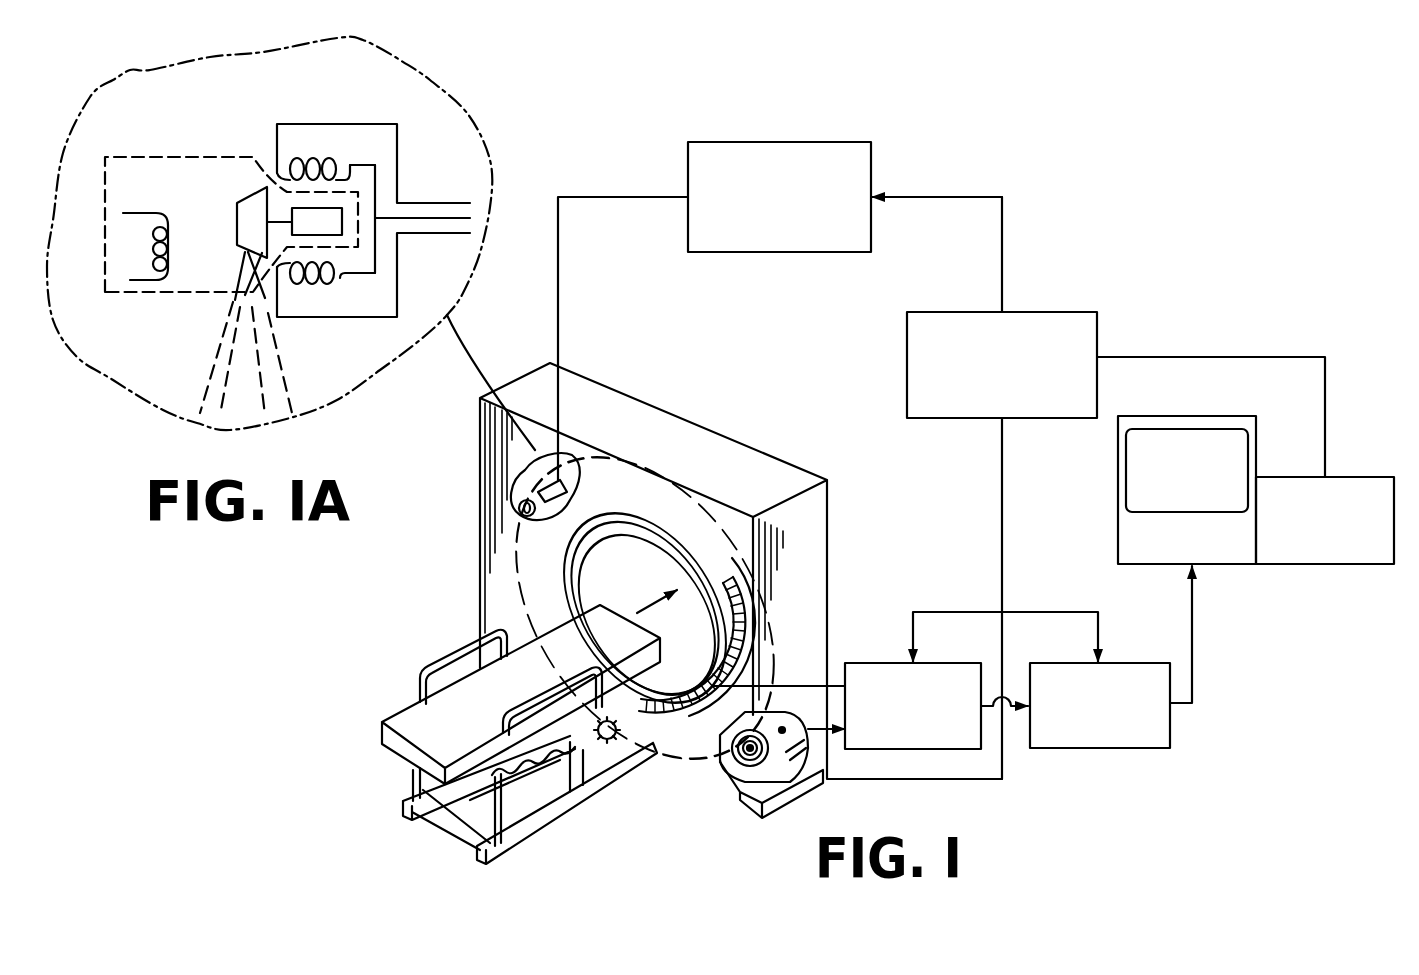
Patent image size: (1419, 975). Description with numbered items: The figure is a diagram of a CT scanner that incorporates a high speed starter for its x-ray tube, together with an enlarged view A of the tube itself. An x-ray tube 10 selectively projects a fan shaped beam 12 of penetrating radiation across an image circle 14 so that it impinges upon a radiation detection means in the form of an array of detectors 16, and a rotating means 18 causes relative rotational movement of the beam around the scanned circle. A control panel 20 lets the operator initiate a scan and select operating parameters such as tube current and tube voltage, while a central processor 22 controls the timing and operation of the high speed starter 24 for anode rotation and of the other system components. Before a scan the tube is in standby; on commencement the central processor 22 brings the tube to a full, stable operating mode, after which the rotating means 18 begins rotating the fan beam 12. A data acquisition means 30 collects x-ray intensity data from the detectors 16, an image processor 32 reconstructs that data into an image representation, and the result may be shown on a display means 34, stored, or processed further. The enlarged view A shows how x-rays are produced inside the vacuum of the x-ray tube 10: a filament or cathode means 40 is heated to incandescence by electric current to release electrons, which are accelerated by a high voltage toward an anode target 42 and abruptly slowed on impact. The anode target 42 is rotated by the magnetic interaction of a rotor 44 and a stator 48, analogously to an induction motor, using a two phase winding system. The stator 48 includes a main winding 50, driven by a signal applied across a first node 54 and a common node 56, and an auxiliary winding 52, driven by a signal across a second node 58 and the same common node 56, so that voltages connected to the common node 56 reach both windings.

In FIG. 1A, the x-ray tube 10 is at (170, 118).
In FIG. 1, the x-ray tube 10 is at (538, 496).
In FIG. 1, the fan shaped beam 12 is at (540, 535).
In FIG. 1, the image circle 14 is at (668, 585).
In FIG. 1, the array of detectors 16 is at (745, 620).
In FIG. 1, the rotating means 18 is at (728, 764).
In FIG. 1, the control panel 20 is at (1347, 477).
In FIG. 1, the central processor 22 is at (1050, 312).
In FIG. 1, the high speed starter 24 is at (808, 142).
In FIG. 1, the data acquisition means 30 is at (865, 663).
In FIG. 1, the image processor 32 is at (1120, 660).
In FIG. 1, the display means 34 is at (1199, 416).
In FIG. 1A, the filament or cathode means 40 is at (147, 280).
In FIG. 1A, the anode target 42 is at (243, 203).
In FIG. 1A, the rotor 44 is at (340, 208).
In FIG. 1A, the stator 48 is at (276, 114).
In FIG. 1A, the main winding 50 is at (333, 163).
In FIG. 1A, the auxiliary winding 52 is at (308, 284).
In FIG. 1A, the first node 54 is at (333, 122).
In FIG. 1A, the common node 56 is at (433, 222).
In FIG. 1A, the second node 58 is at (357, 317).
In FIG. 1A, the enlarged view A is at (427, 80).